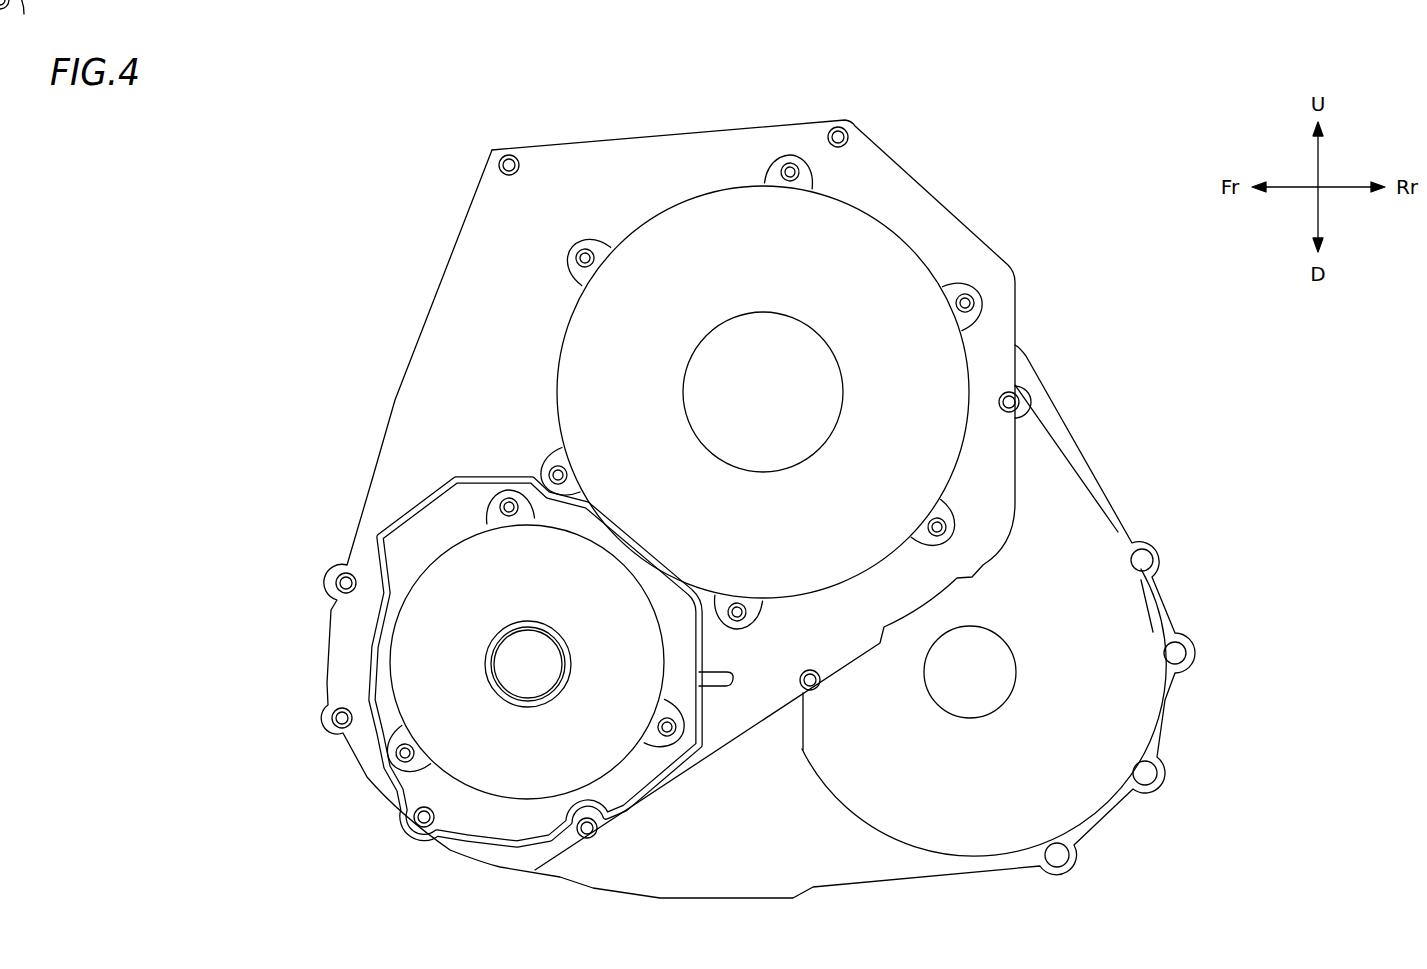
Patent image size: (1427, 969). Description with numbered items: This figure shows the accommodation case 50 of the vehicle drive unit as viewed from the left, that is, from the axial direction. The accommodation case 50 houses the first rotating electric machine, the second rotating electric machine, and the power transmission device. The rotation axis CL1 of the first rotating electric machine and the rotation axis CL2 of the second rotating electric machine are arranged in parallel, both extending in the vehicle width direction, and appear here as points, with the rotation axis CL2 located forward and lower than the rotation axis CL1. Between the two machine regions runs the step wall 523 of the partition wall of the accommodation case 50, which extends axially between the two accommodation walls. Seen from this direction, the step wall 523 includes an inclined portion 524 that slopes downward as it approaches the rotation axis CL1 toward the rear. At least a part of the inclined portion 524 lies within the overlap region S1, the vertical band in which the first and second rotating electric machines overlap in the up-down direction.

The accommodation case 50 is at (583, 148).
The step wall 523 is at (511, 494).
The inclined portion 524 is at (636, 552).
The rotation axis of the first rotating electric machine CL1 is at (766, 388).
The rotation axis of the second rotating electric machine CL2 is at (531, 667).
The overlap region S1 is at (287, 495).